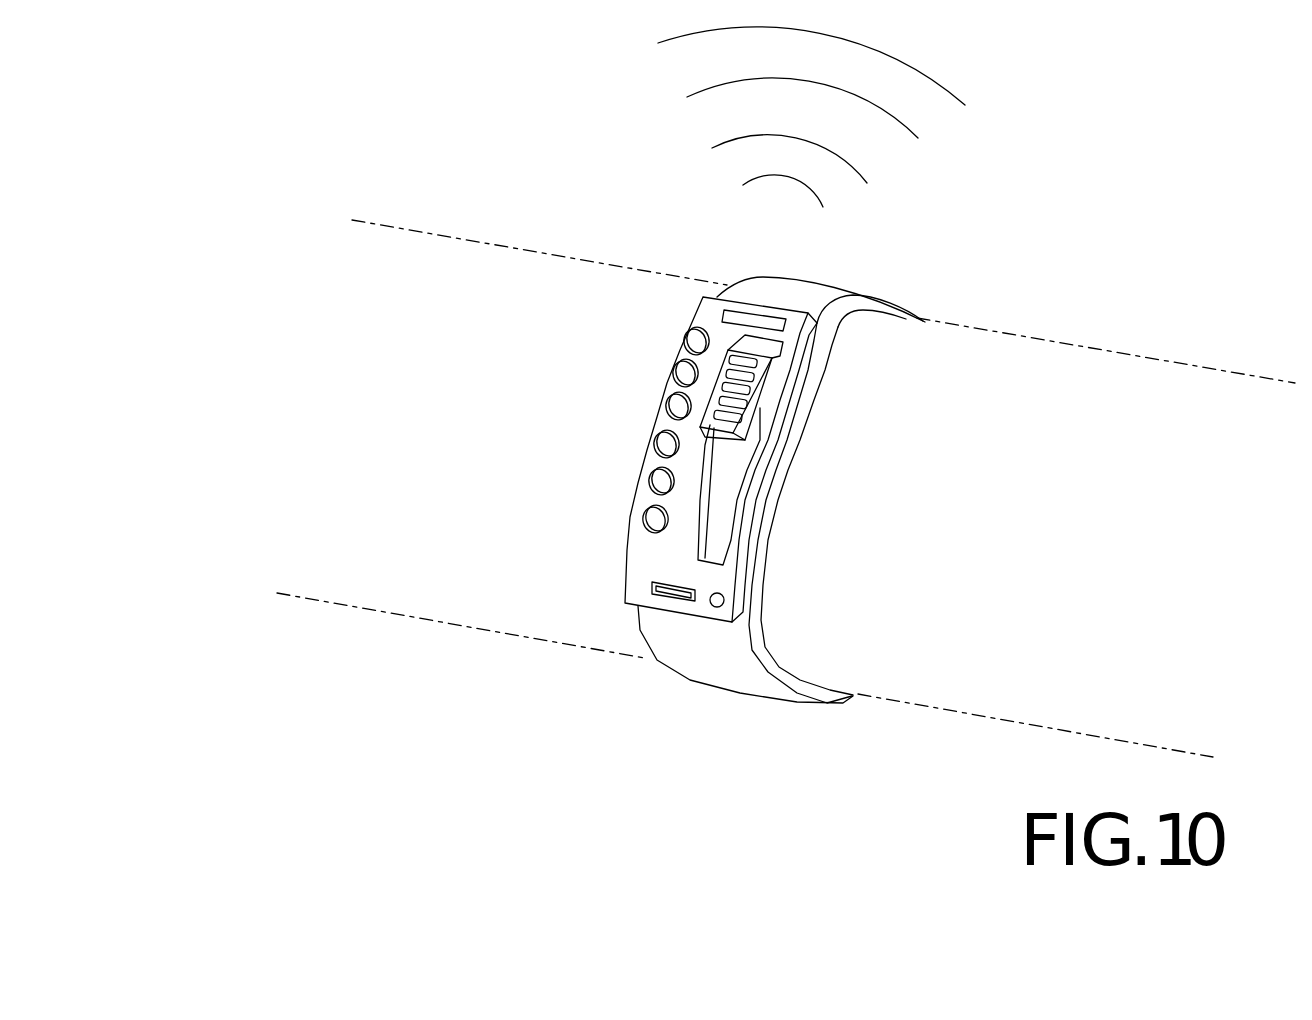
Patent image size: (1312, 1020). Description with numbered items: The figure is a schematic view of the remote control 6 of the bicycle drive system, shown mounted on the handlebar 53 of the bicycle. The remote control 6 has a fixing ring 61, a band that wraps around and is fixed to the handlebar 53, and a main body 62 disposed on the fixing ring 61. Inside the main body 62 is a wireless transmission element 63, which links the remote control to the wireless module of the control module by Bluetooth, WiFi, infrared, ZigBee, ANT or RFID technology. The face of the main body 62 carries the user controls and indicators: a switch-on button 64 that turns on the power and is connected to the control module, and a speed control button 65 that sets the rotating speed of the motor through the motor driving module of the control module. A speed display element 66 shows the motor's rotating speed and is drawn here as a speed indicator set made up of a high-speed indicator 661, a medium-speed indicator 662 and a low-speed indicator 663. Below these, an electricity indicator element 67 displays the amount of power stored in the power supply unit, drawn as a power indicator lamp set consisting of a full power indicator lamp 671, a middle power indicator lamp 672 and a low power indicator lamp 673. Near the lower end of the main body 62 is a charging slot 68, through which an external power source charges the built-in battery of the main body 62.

The remote control 6 is at (712, 453).
The handlebar 53 is at (1209, 408).
The fixing ring 61 is at (763, 686).
The main body 62 is at (624, 578).
The wireless transmission element 63 is at (768, 320).
The switch-on button 64 is at (717, 608).
The speed control button 65 is at (753, 388).
The speed display element 66 is at (551, 227).
The high-speed indicator 661 is at (695, 338).
The medium-speed indicator 662 is at (684, 372).
The low-speed indicator 663 is at (676, 405).
The electricity indicator element 67 is at (486, 599).
The full power indicator lamp 671 is at (662, 445).
The middle power indicator lamp 672 is at (657, 480).
The low power indicator lamp 673 is at (652, 520).
The charging slot 68 is at (663, 597).